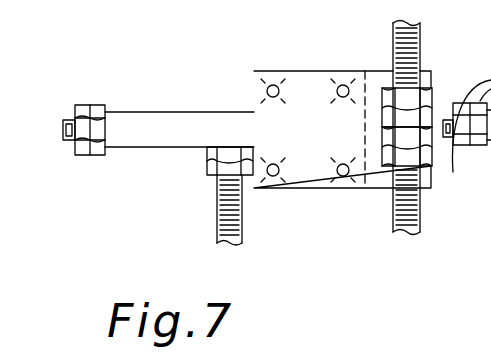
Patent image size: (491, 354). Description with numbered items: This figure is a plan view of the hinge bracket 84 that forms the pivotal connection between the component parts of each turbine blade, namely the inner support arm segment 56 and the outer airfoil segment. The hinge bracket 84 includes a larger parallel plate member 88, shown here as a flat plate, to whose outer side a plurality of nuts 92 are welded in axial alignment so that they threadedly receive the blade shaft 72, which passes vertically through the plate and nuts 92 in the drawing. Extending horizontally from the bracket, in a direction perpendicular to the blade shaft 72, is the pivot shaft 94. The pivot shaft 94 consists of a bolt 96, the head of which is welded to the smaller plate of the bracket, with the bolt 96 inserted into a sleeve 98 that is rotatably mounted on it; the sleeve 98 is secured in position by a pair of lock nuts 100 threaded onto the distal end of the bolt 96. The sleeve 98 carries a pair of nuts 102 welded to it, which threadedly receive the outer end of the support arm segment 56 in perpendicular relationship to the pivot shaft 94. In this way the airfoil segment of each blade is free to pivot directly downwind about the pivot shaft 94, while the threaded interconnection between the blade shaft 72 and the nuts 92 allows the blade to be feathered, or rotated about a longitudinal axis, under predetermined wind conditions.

The inner support arm segment 56 is at (242, 228).
The blade shaft 72 is at (420, 218).
The hinge bracket 84 is at (337, 238).
The larger parallel plate member 88 is at (307, 177).
The nuts 92 is at (432, 113).
The pivot shaft 94 is at (144, 97).
The bolt 96 is at (64, 139).
The sleeve 98 is at (177, 117).
The lock nuts 100 is at (90, 155).
The nuts 102 is at (214, 156).